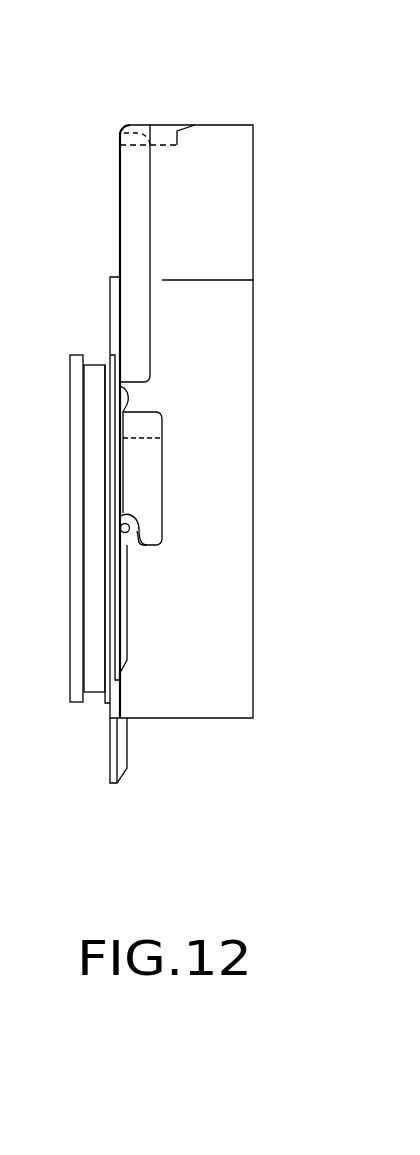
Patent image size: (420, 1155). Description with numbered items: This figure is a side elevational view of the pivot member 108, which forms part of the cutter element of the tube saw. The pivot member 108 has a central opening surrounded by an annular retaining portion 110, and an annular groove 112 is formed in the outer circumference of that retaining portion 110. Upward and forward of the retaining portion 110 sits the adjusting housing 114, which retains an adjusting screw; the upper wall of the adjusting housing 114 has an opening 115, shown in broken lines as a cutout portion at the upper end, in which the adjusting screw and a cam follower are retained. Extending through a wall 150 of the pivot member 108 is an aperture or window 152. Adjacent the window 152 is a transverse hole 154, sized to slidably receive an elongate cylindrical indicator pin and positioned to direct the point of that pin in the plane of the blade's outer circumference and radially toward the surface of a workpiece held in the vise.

The pivot member 108 is at (205, 720).
The annular retaining portion 110 is at (75, 355).
The annular groove 112 is at (93, 365).
The adjusting housing 114 is at (253, 145).
The opening 115 is at (213, 113).
The wall 150 is at (185, 637).
The window 152 is at (121, 484).
The transverse hole 154 is at (122, 533).